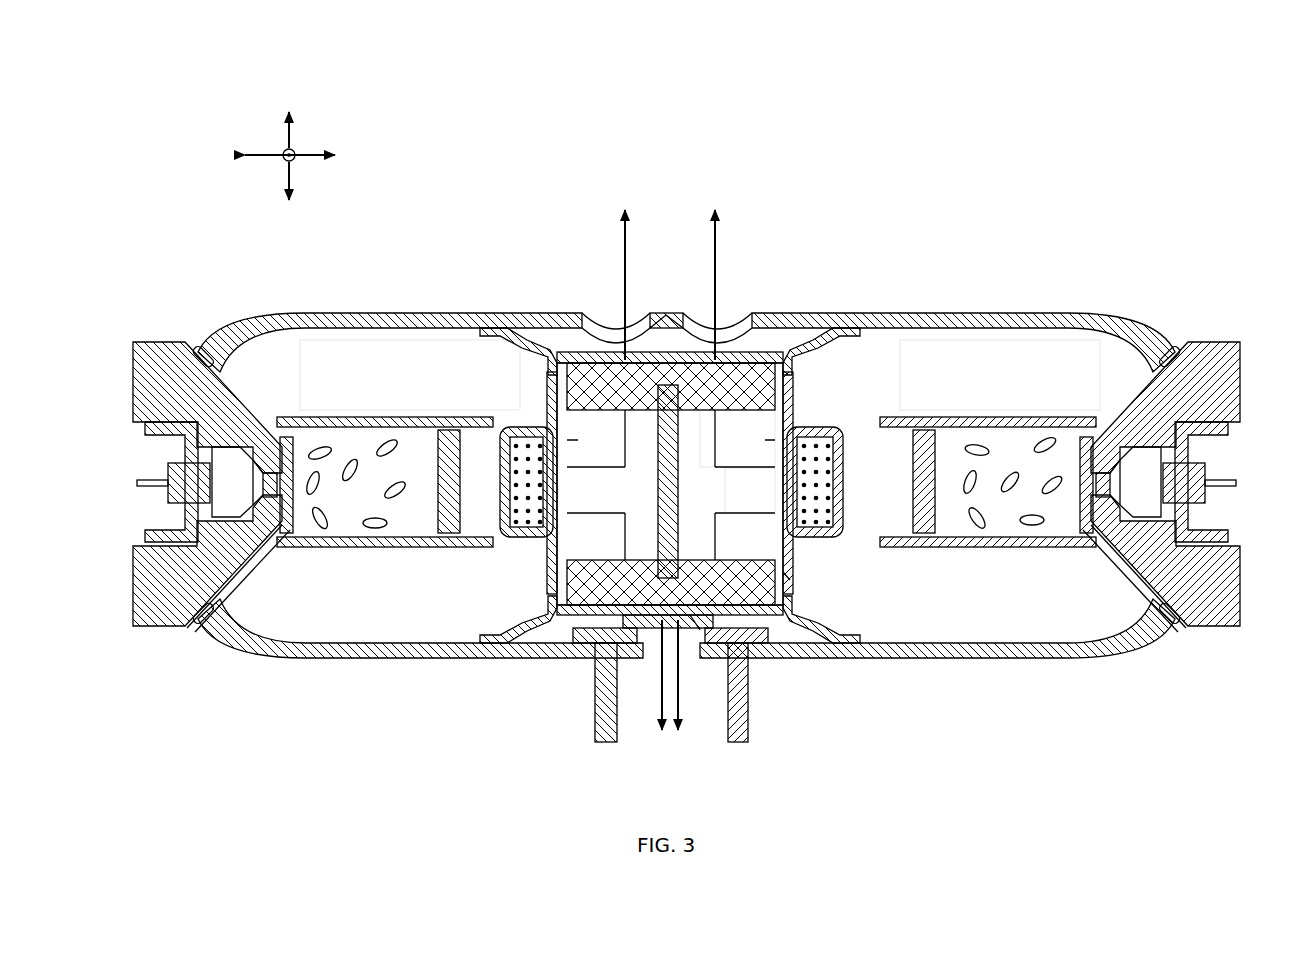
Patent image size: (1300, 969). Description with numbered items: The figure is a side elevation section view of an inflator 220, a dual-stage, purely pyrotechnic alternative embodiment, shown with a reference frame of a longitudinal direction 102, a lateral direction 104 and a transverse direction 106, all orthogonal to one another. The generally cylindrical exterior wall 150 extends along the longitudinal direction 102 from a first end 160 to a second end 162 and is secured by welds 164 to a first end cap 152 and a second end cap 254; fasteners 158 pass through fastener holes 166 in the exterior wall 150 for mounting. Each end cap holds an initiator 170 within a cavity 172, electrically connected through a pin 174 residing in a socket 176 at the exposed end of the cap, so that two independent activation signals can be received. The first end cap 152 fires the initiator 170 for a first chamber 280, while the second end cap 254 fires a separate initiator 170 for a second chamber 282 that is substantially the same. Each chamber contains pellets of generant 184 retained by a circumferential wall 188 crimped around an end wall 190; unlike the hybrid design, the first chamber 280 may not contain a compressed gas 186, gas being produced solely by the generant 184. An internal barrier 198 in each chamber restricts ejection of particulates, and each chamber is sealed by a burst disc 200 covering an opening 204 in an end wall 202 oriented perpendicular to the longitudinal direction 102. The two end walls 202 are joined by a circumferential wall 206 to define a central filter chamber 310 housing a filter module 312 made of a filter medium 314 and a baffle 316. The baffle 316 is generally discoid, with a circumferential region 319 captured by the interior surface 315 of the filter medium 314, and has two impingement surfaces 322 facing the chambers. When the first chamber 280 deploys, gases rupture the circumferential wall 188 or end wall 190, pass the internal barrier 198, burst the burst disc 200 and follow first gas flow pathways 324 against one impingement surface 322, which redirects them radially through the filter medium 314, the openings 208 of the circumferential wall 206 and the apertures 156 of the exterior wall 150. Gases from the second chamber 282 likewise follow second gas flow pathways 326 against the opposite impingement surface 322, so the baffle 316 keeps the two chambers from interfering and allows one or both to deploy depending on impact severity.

The longitudinal direction 102 is at (324, 150).
The lateral direction 104 is at (296, 162).
The transverse direction 106 is at (290, 138).
The exterior wall 150 is at (985, 250).
The first end cap 152 is at (147, 300).
The second end cap 254 is at (1218, 272).
The inflator 220 is at (945, 130).
The apertures 156 is at (603, 318).
The fasteners 158 is at (595, 730).
The first end 160 is at (328, 660).
The second end 162 is at (1052, 660).
The welds 164 is at (204, 350).
The fastener holes 166 is at (590, 648).
The initiator 170 is at (232, 480).
The cavity 172 is at (225, 600).
The pin 174 is at (137, 485).
The socket 176 is at (130, 455).
The generant 184 is at (368, 545).
The gas 186 is at (372, 640).
The circumferential wall 188 is at (397, 549).
The end wall 190 is at (452, 430).
The internal barrier 198 is at (520, 535).
The burst disc 200 is at (567, 478).
The end wall 202 is at (545, 595).
The opening 204 is at (567, 500).
The circumferential wall 206 is at (772, 320).
The openings 208 is at (700, 340).
The first chamber 280 is at (395, 385).
The second chamber 282 is at (1028, 371).
The filter chamber 310 is at (765, 436).
The filter module 312 is at (785, 578).
The filter medium 314 is at (595, 355).
The interior surface 315 is at (630, 420).
The baffle 316 is at (655, 525).
The circumferential region 319 is at (690, 612).
The impingement surfaces 322 is at (658, 445).
The first gas flow pathways 324 is at (600, 418).
The second gas flow pathways 326 is at (715, 452).